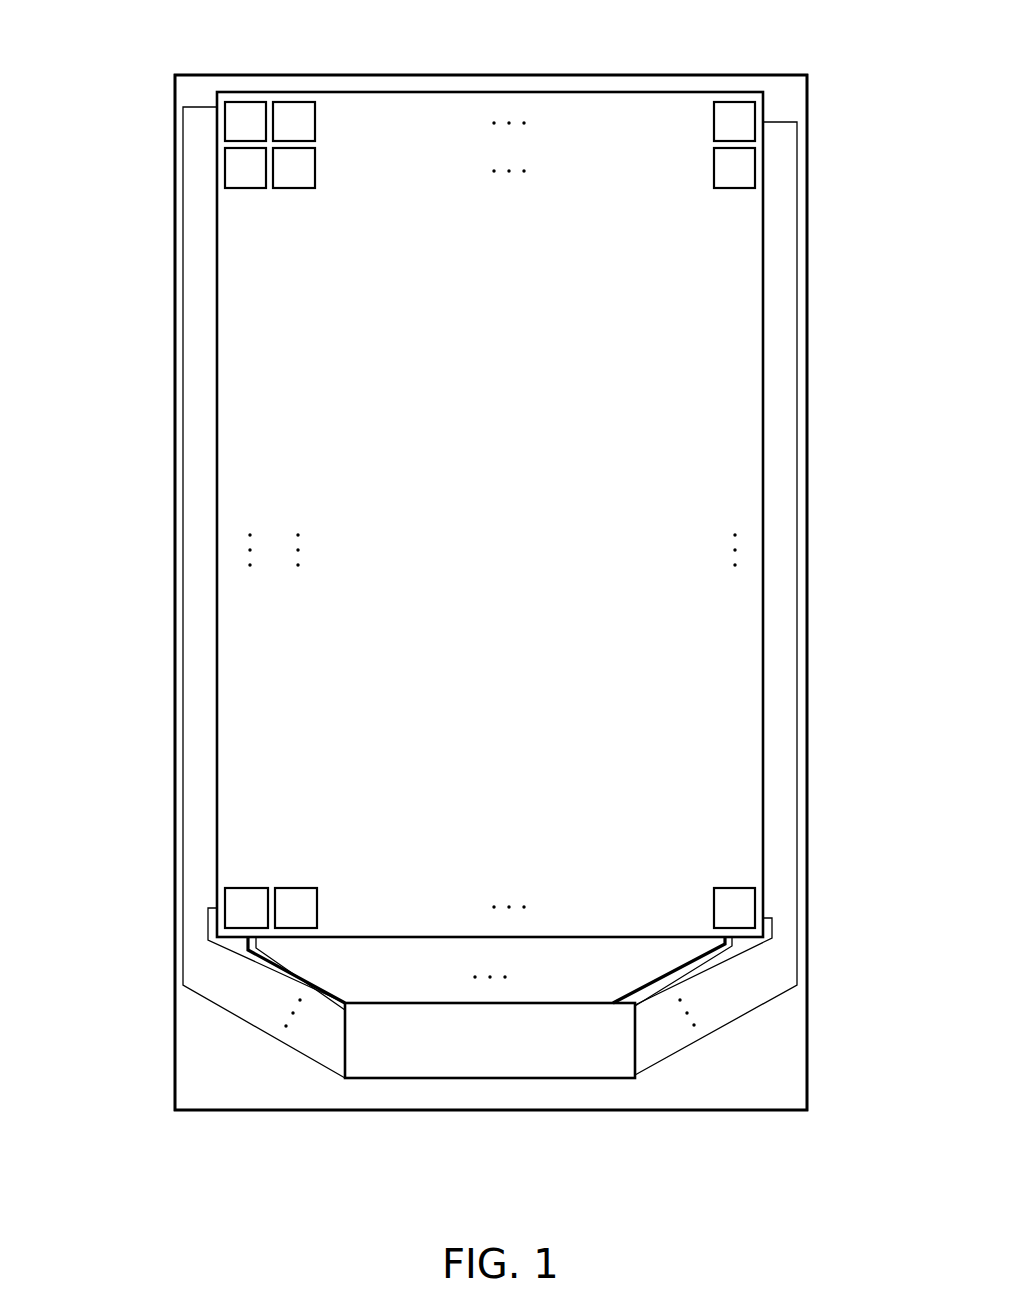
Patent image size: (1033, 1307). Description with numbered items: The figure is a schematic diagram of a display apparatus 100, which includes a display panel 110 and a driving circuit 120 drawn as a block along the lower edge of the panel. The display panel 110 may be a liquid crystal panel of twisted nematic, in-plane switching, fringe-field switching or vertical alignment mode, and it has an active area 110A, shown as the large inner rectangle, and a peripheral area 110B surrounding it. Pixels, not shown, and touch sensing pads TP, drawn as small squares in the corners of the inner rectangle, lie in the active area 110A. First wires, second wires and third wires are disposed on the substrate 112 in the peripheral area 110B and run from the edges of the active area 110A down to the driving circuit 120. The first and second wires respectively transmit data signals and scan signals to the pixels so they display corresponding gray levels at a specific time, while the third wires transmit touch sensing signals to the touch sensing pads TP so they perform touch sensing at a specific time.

The display apparatus 100 is at (150, 23).
The display panel 110 is at (808, 365).
The active area 110A is at (745, 483).
The peripheral area 110B is at (786, 1050).
The substrate 112 is at (232, 1083).
The driving circuit 120 is at (488, 1078).
The touch sensing pads TP is at (748, 130).